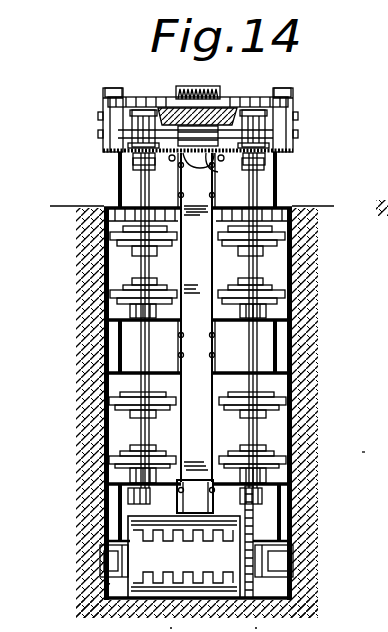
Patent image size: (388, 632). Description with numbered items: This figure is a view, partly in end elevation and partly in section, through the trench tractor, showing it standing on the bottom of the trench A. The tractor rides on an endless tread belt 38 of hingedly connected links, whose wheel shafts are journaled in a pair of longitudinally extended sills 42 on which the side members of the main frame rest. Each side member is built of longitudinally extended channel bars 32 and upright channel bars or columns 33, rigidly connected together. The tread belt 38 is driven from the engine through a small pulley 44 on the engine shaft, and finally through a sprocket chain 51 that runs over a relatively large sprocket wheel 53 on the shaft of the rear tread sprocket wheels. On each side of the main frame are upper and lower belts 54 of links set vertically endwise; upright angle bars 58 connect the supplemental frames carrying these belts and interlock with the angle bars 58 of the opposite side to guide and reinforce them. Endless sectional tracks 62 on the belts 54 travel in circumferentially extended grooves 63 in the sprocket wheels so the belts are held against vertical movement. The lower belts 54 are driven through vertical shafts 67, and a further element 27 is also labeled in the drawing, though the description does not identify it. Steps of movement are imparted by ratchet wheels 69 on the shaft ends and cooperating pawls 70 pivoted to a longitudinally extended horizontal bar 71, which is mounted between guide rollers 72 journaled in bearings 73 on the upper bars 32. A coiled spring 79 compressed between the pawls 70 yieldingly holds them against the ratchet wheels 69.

The piston rod 27 is at (138, 430).
The channel bars 32 is at (118, 178).
The columns 33 is at (374, 447).
The tread belt 38 is at (184, 557).
The sills 42 is at (100, 556).
The pulley 44 is at (172, 628).
The sprocket chain 51 is at (256, 586).
The sprocket wheel 53 is at (262, 628).
The belts 54 is at (108, 258).
The angle bars 58 is at (157, 548).
The sectional tracks 62 is at (263, 238).
The grooves 63 is at (292, 211).
The vertical shafts 67 is at (262, 432).
The ratchet wheels 69 is at (137, 104).
The pawls 70 is at (161, 106).
The bar 71 is at (248, 109).
The guide rollers 72 is at (213, 97).
The bearings 73 is at (110, 118).
The coiled spring 79 is at (195, 91).
The trench A is at (288, 336).